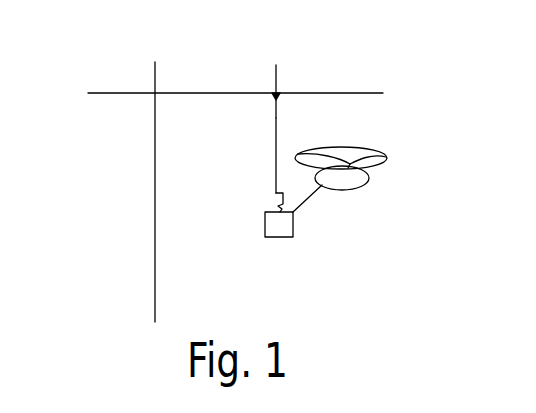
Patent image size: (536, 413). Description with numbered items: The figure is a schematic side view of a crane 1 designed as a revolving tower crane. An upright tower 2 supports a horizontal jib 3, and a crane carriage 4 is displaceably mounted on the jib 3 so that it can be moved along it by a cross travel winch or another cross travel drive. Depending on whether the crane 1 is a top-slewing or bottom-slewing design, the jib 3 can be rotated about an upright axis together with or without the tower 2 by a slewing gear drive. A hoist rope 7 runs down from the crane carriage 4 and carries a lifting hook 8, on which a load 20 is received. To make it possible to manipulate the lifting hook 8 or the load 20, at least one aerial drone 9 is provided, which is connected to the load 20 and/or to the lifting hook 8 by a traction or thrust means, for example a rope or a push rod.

The crane 1 is at (190, 78).
The tower 2 is at (154, 166).
The jib 3 is at (359, 93).
The crane carriage 4 is at (275, 77).
The hoist rope 7 is at (276, 118).
The lifting hook 8 is at (272, 193).
The aerial drone 9 is at (385, 170).
The load 20 is at (265, 238).